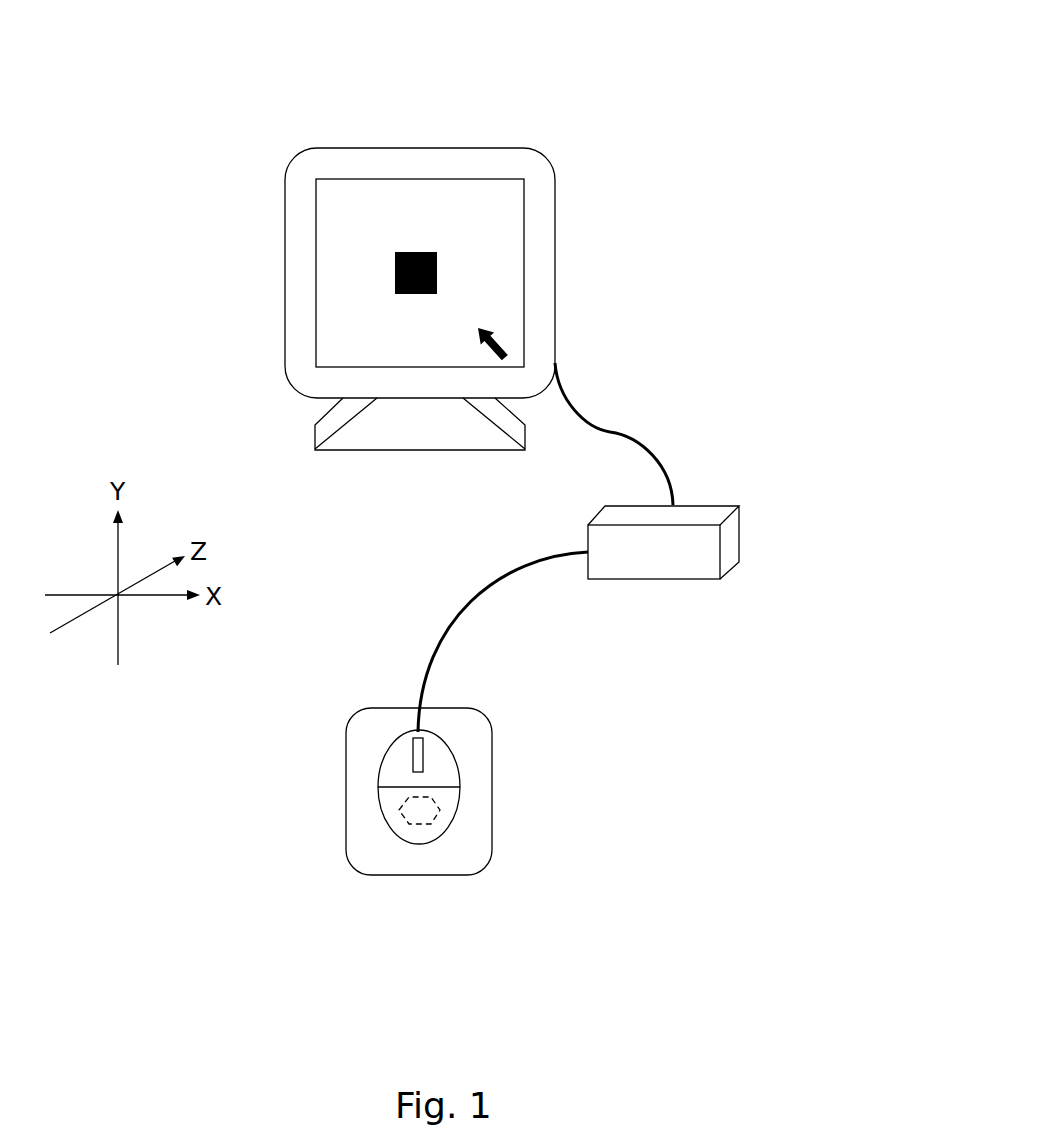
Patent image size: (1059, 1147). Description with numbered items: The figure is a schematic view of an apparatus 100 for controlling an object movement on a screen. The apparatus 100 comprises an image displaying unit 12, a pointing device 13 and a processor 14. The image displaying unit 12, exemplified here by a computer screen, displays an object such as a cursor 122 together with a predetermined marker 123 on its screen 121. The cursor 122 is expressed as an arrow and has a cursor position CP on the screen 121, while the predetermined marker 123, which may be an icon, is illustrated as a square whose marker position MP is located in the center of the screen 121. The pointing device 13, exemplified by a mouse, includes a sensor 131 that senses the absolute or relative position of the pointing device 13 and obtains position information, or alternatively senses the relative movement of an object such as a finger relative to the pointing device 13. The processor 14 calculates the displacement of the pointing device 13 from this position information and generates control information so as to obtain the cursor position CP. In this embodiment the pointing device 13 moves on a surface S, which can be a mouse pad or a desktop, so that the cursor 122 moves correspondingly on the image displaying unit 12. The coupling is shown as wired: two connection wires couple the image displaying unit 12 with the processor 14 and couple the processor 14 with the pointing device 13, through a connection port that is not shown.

The apparatus for controlling an object movement on a screen 100 is at (805, 75).
The image displaying unit 12 is at (285, 193).
The screen 121 is at (316, 282).
The cursor 122 is at (500, 337).
The predetermined marker 123 is at (438, 257).
The marker position MP is at (413, 236).
The cursor position CP is at (483, 306).
The pointing device 13 is at (450, 750).
The sensor 131 is at (399, 810).
The processor 14 is at (739, 506).
The surface S is at (492, 833).